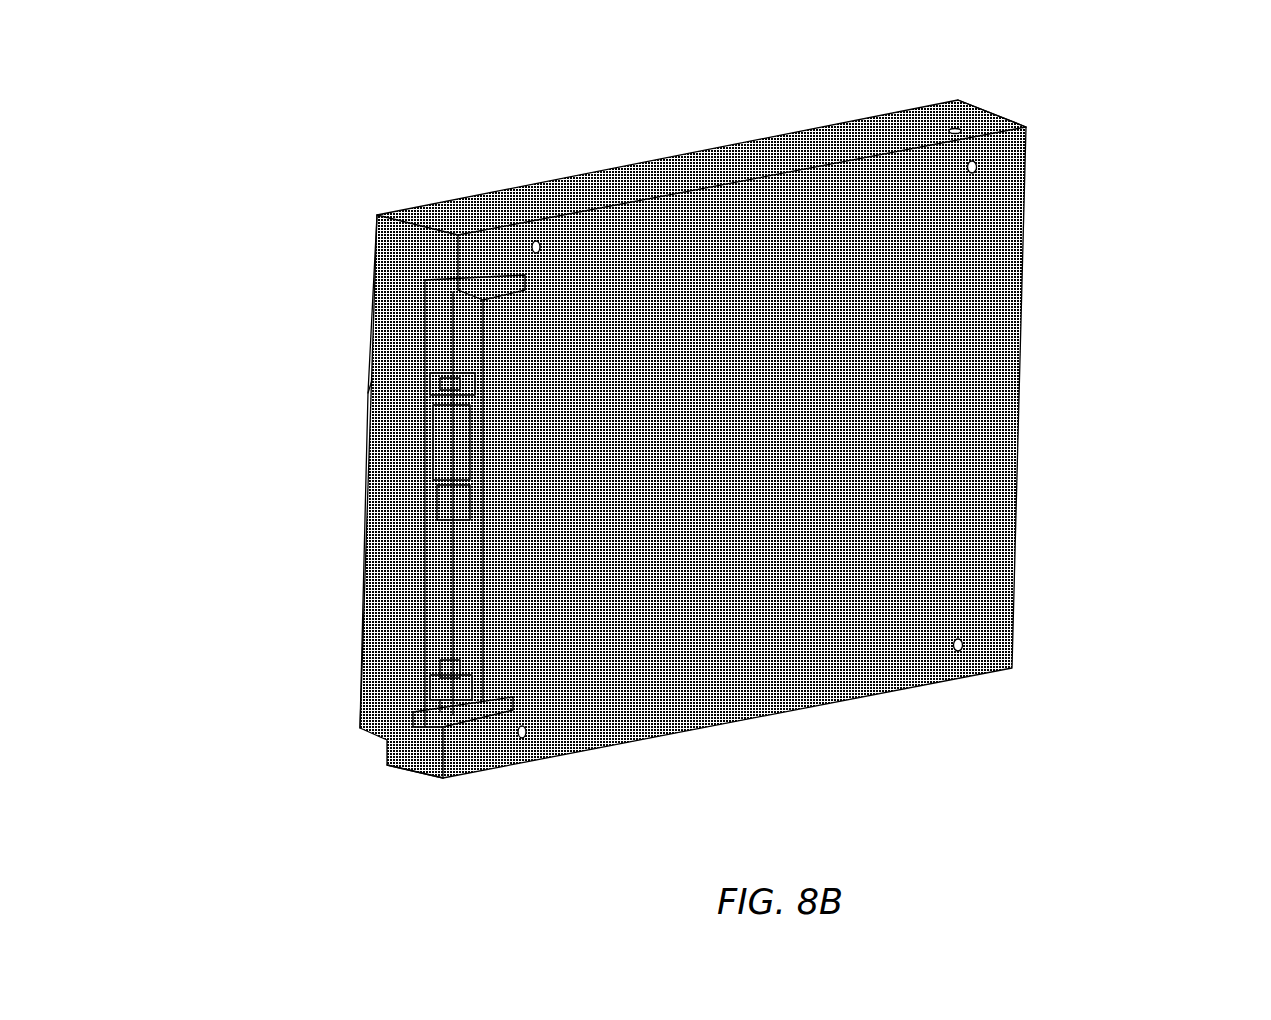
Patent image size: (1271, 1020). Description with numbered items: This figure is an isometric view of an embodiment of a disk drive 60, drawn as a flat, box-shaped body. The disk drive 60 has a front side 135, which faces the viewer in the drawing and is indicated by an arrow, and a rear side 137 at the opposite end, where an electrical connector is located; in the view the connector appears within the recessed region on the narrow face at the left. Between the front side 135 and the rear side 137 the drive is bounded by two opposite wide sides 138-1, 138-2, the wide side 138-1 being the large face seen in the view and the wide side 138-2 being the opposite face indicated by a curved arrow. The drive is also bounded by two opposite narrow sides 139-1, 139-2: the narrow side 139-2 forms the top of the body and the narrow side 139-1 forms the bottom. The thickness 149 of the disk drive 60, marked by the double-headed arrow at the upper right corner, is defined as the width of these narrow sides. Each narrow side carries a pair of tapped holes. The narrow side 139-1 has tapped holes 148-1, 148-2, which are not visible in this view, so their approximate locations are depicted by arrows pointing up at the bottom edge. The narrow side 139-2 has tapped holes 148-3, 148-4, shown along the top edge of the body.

The disk drive 60 is at (240, 283).
The front side 135 is at (1022, 409).
The rear side 137 is at (387, 578).
The wide side 138-1 is at (730, 515).
The wide side 138-2 is at (366, 393).
The narrow side 139-1 is at (475, 774).
The narrow side 139-2 is at (675, 177).
The tapped hole 148-1 is at (963, 687).
The tapped hole 148-2 is at (514, 774).
The tapped hole 148-3 is at (942, 124).
The tapped hole 148-4 is at (525, 215).
The thickness 149 is at (965, 99).